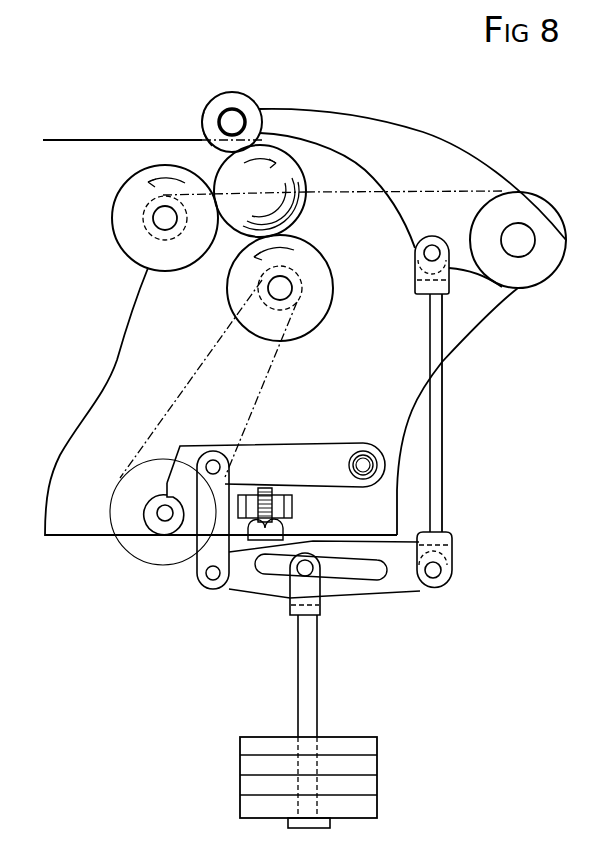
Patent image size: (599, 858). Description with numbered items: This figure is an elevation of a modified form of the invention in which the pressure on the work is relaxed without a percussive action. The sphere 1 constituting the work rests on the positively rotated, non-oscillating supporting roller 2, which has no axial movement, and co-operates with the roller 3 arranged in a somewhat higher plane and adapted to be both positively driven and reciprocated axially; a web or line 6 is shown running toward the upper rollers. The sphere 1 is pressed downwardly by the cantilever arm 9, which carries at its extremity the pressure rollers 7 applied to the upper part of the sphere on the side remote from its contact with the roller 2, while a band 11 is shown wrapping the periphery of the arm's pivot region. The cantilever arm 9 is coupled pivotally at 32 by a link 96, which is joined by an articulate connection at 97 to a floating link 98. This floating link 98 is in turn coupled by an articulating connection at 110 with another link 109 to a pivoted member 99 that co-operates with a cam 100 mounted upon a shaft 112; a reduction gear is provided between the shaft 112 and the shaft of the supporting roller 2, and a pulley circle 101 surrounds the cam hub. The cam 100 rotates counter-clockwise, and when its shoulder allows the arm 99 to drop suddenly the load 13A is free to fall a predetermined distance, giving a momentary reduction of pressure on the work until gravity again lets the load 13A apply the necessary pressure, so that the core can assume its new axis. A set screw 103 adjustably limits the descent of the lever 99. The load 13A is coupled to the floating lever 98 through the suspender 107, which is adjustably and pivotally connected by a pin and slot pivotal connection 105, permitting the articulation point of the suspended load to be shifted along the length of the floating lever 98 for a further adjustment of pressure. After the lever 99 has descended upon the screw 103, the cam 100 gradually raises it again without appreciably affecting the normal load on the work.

The sphere 1 is at (260, 191).
The roller 2 is at (326, 265).
The roller 3 is at (110, 216).
The web 6 is at (109, 140).
The pressure rollers 7 is at (249, 110).
The cantilever arm 9 is at (518, 231).
The belt 11 is at (461, 411).
The pivotal coupling 32 is at (414, 266).
The link 96 is at (438, 443).
The articulate connection 97 is at (453, 569).
The floating link 98 is at (400, 593).
The pivoted member 99 is at (333, 446).
The cam 100 is at (143, 510).
The pulley 101 is at (130, 472).
The set screw 103 is at (292, 503).
The pin and slot pivotal connection 105 is at (306, 567).
The suspender 107 is at (320, 657).
The link 109 is at (197, 560).
The articulating connection 110 is at (212, 579).
The shaft 112 is at (162, 522).
The load 13A is at (352, 729).